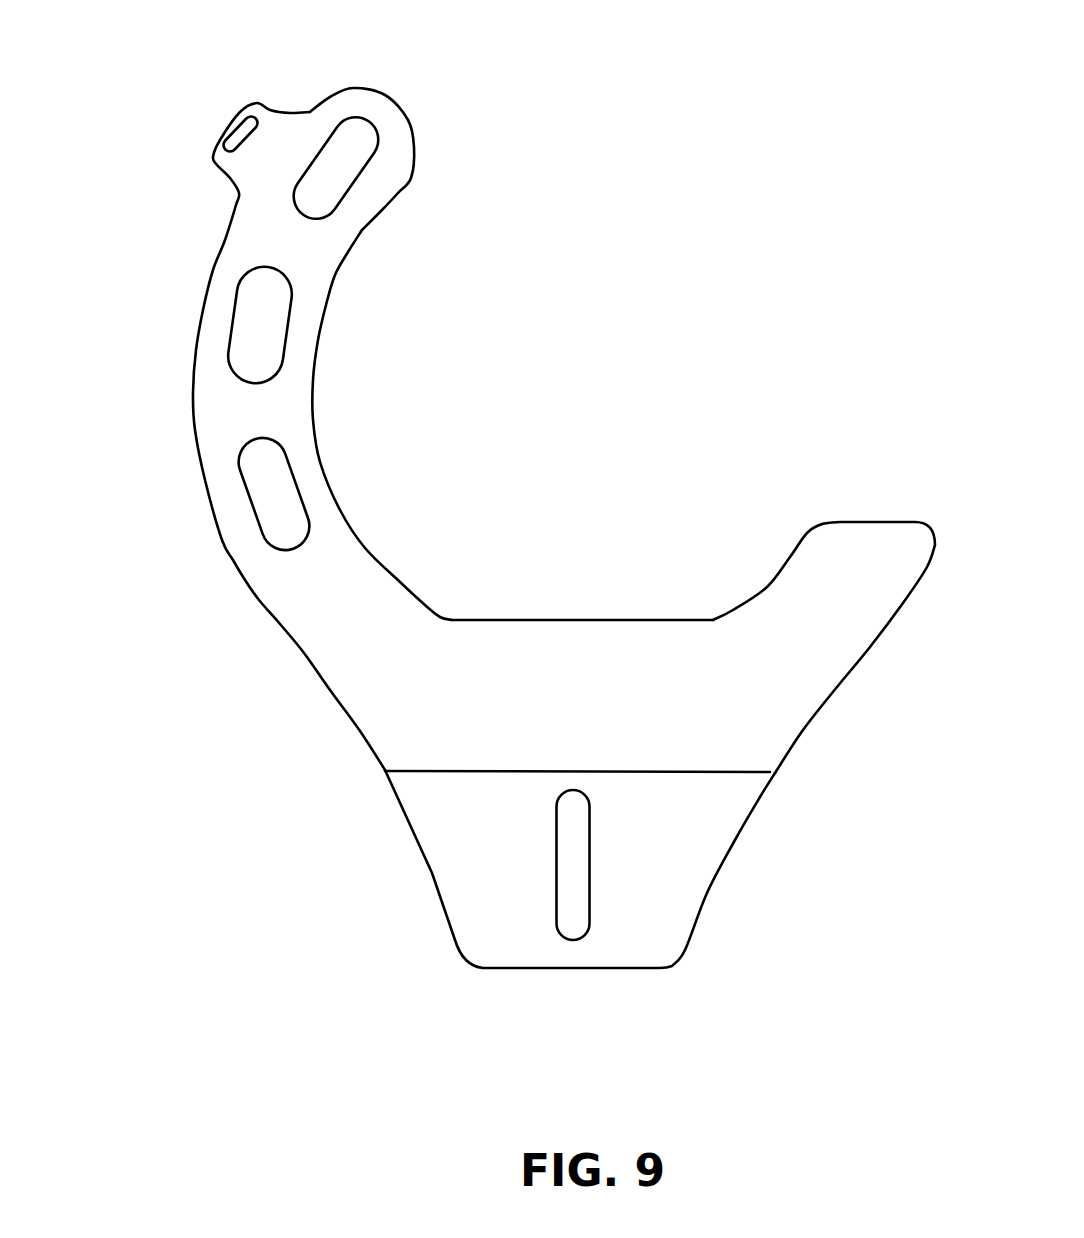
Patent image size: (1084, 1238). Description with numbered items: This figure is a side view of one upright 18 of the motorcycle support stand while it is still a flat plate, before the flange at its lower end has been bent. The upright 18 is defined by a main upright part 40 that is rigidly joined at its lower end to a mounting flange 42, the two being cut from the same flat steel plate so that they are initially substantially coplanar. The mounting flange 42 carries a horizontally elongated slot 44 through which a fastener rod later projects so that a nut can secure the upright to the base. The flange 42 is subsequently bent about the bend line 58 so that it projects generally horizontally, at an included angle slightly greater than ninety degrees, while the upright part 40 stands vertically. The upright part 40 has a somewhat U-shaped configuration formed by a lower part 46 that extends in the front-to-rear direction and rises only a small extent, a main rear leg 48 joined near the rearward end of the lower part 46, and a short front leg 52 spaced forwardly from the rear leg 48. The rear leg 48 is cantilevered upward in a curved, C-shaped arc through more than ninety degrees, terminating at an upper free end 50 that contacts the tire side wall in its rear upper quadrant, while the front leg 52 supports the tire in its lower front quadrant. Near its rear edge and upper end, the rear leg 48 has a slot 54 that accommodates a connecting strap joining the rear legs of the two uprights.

The upright 18 is at (502, 538).
The main upright part 40 is at (258, 404).
The mounting flange 42 is at (501, 862).
The slot 44 is at (573, 908).
The lower part 46 is at (615, 655).
The main rear leg 48 is at (263, 420).
The upper free end 50 is at (400, 102).
The front leg 52 is at (865, 537).
The slot 54 is at (246, 143).
The bend line 58 is at (700, 772).